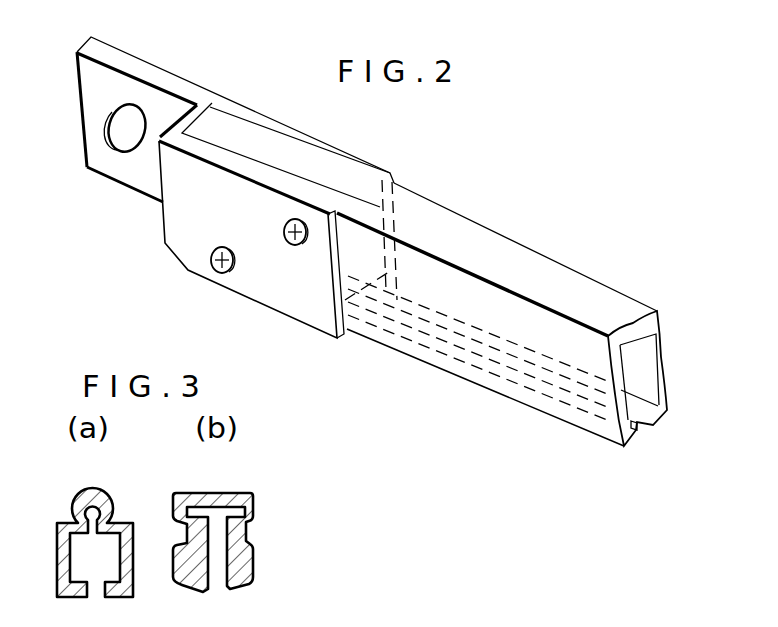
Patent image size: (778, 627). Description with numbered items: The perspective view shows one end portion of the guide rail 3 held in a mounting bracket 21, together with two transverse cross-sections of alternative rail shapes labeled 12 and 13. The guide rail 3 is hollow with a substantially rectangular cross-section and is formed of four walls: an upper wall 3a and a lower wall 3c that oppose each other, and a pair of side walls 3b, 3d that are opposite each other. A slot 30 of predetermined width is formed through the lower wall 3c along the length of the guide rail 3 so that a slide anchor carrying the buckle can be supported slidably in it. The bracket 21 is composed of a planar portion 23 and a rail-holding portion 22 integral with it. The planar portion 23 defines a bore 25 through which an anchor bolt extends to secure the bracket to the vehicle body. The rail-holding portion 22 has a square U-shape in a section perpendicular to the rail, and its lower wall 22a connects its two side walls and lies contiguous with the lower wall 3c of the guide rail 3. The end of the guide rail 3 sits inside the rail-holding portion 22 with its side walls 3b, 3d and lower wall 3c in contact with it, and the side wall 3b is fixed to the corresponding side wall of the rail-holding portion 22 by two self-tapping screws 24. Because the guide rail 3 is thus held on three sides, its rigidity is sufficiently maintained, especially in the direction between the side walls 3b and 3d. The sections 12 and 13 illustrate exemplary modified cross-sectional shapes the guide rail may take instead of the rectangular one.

In FIG. 2, the guide rail 3 is at (550, 243).
In FIG. 2, the upper wall 3a is at (578, 302).
In FIG. 2, the side wall 3b is at (498, 315).
In FIG. 2, the lower wall 3c is at (634, 450).
In FIG. 2, the side wall 3d is at (663, 331).
In FIG. 2, the slot 30 is at (638, 426).
In FIG. 2, the bracket 21 is at (145, 207).
In FIG. 2, the rail-holding portion 22 is at (264, 304).
In FIG. 2, the lower wall 22a is at (369, 305).
In FIG. 2, the planar portion 23 is at (80, 93).
In FIG. 2, the self-tapping screws 24 is at (285, 222).
In FIG. 2, the bore 25 is at (124, 108).
In FIG. 3, the rail profile (a) 12 is at (78, 480).
In FIG. 3, the rail profile (b) 13 is at (205, 485).